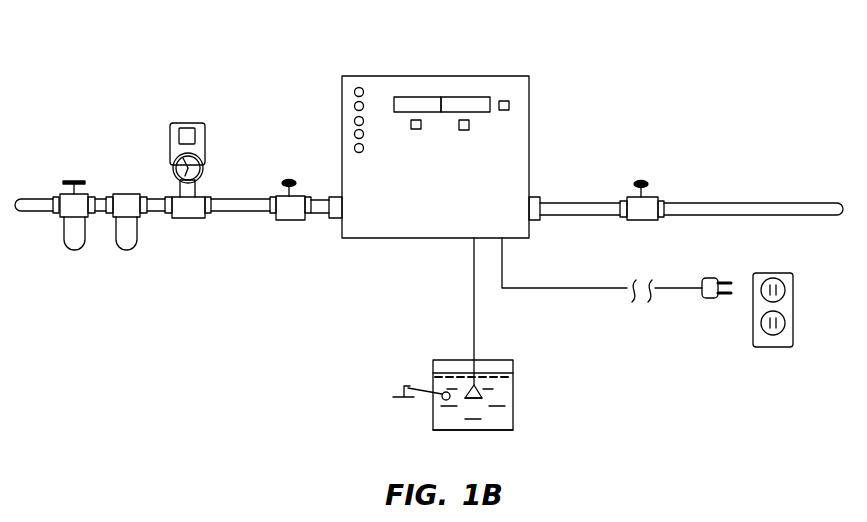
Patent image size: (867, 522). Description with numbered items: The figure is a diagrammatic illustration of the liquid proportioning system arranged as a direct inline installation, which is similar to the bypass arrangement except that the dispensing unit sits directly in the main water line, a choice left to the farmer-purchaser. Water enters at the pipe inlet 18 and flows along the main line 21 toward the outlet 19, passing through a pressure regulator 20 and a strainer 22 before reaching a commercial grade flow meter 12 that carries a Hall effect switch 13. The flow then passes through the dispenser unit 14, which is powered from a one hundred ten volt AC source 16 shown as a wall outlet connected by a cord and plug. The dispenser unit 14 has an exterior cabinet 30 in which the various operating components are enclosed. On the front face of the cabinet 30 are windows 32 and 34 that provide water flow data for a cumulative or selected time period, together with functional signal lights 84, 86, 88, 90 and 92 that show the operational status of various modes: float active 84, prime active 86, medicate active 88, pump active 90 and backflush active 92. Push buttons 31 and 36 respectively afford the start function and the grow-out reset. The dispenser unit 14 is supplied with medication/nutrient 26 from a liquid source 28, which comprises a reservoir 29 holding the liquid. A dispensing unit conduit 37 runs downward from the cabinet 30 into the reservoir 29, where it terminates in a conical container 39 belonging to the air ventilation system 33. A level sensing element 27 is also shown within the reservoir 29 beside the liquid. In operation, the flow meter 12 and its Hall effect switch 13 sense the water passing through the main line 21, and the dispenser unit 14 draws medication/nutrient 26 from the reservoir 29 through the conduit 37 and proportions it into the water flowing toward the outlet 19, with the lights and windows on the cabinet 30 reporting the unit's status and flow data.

The flow meter 12 is at (204, 170).
The Hall effect switch 13 is at (188, 123).
The dispenser unit 14 is at (444, 126).
The 110 volt AC source 16 is at (771, 265).
The pipe inlet 18 is at (36, 199).
The outlet 19 is at (812, 203).
The pressure regulator 20 is at (71, 246).
The main line 21 is at (598, 203).
The strainer 22 is at (130, 246).
The medication/nutrient 26 is at (502, 413).
The level sensor 27 is at (410, 385).
The liquid source 28 is at (479, 388).
The reservoir 29 is at (497, 431).
The exterior cabinet 30 is at (514, 162).
The push button 31 is at (509, 106).
The window 32 is at (454, 108).
The air ventilation system 33 is at (492, 389).
The window 34 is at (417, 103).
The push button 36 is at (465, 130).
The dispensing unit conduit 37 is at (475, 333).
The conical container 39 is at (472, 400).
The float active signal light 84 is at (358, 87).
The prime active signal light 86 is at (354, 105).
The medicate active signal light 88 is at (354, 120).
The pump active signal light 90 is at (354, 134).
The backflush active signal light 92 is at (354, 148).